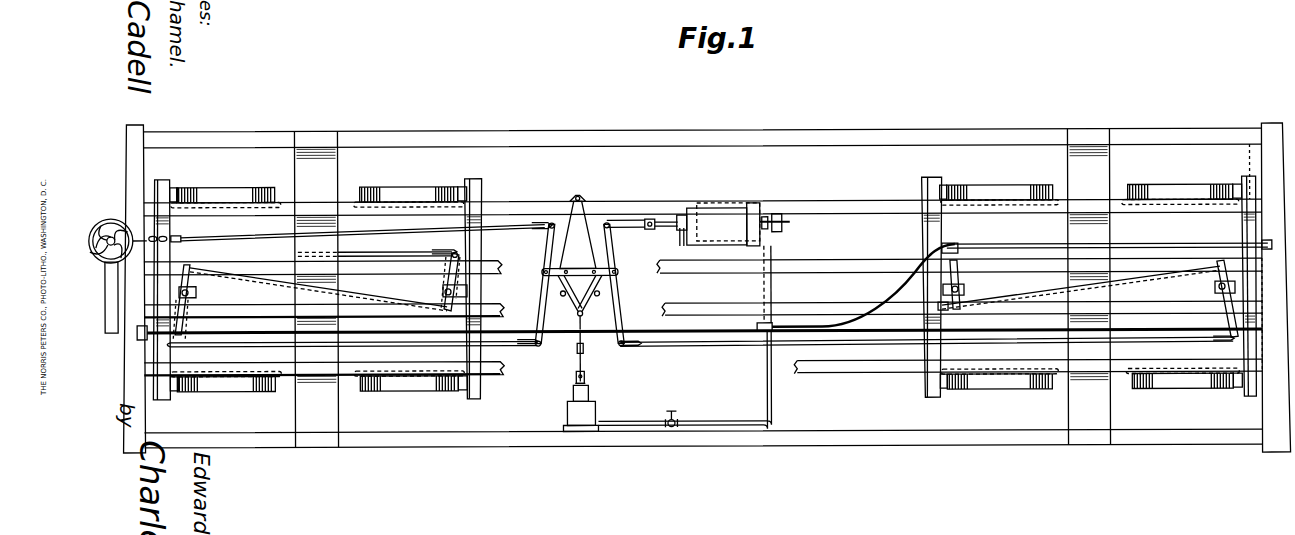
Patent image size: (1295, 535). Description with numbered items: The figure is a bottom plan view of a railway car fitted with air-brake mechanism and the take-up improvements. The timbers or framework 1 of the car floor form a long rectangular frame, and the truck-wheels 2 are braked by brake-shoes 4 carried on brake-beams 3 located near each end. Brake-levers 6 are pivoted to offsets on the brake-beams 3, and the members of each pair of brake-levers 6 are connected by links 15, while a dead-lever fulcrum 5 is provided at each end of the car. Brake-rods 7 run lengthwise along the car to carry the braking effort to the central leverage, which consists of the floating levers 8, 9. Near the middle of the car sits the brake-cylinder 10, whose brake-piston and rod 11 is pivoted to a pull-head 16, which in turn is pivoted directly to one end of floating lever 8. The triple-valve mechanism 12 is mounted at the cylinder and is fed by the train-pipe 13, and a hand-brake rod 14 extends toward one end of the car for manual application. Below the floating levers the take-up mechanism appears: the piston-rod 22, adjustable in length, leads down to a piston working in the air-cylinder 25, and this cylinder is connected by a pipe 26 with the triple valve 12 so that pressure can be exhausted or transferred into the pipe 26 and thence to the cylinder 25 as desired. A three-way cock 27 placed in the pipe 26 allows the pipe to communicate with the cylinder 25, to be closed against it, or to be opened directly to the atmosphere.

The timbers or framework of the car floor 1 is at (617, 126).
The truck-wheels 2 is at (1196, 392).
The brake-beams 3 is at (160, 398).
The brake-shoes 4 is at (1236, 396).
The dead-lever fulcrum 5 is at (1010, 248).
The brake-levers 6 is at (1217, 295).
The brake-rods 7 is at (873, 334).
The floating lever 8 is at (622, 300).
The floating lever 9 is at (538, 293).
The brake-cylinder 10 is at (748, 216).
The brake-piston and its rod or stem 11 is at (670, 232).
The triple-valve mechanism 12 is at (786, 230).
The train-pipe 13 is at (882, 297).
The hand-brake rod 14 is at (350, 228).
The links 15 is at (1128, 308).
The pull-head 16 is at (624, 233).
The piston-rod 22 is at (585, 360).
The air-cylinder 25 is at (567, 412).
The pipe 26 is at (641, 424).
The three-way cock 27 is at (680, 421).